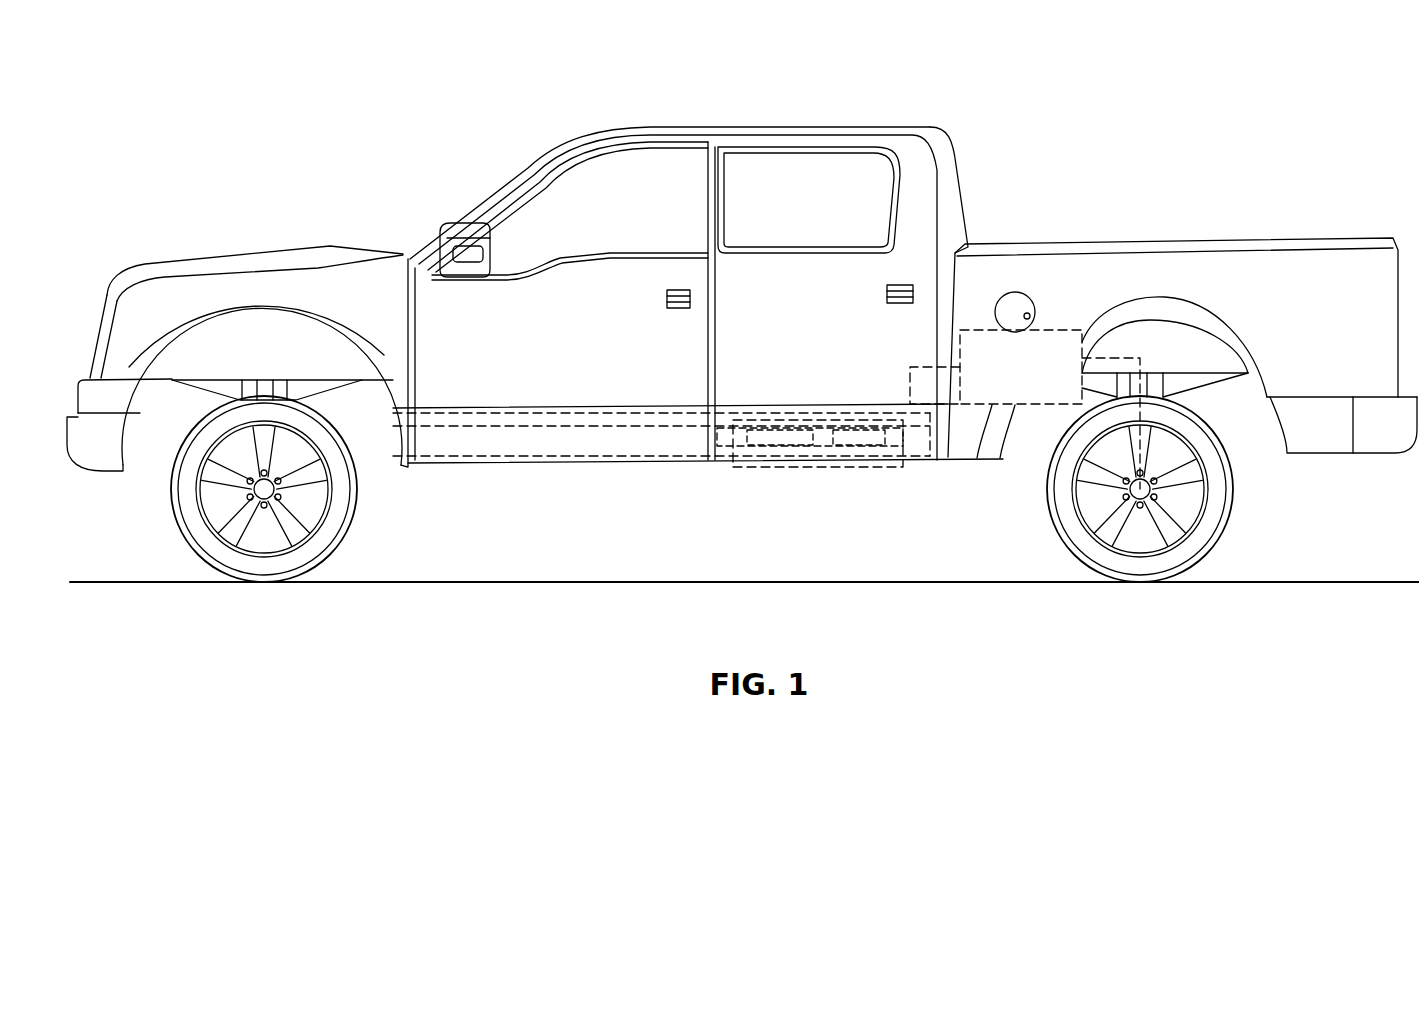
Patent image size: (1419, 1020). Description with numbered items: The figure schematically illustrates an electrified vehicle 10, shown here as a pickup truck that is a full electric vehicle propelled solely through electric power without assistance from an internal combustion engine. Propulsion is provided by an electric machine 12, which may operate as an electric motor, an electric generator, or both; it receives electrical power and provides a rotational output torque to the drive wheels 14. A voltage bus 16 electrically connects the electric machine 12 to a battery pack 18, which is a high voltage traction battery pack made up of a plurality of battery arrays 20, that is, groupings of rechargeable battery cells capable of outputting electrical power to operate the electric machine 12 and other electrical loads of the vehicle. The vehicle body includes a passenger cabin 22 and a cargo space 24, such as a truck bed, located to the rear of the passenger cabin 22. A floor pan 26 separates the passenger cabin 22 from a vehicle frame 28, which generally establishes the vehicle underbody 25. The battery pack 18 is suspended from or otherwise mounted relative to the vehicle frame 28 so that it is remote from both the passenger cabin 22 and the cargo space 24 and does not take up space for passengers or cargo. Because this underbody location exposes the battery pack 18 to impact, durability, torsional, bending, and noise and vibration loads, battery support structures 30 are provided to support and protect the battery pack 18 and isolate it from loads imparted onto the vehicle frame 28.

The electrified vehicle 10 is at (740, 82).
The electric machine 12 is at (1062, 330).
The drive wheels 14 is at (249, 563).
The voltage bus 16 is at (910, 383).
The battery pack 18 is at (824, 430).
The battery arrays 20 is at (810, 441).
The passenger cabin 22 is at (631, 177).
The cargo space 24 is at (1181, 236).
The vehicle underbody 25 is at (595, 465).
The floor pan 26 is at (557, 411).
The vehicle frame 28 is at (506, 435).
The battery support structures 30 is at (740, 473).